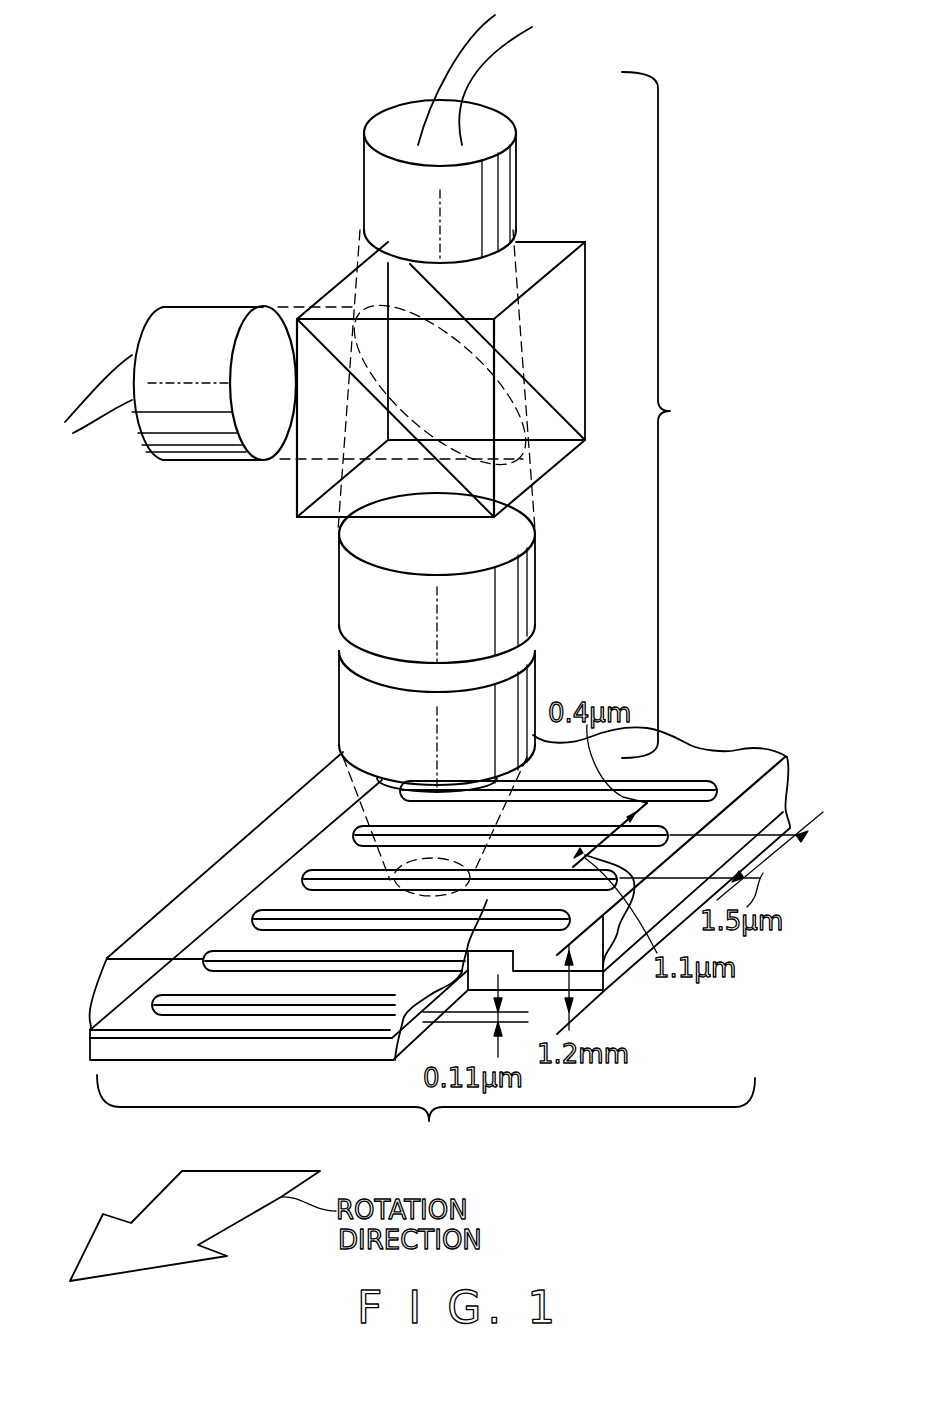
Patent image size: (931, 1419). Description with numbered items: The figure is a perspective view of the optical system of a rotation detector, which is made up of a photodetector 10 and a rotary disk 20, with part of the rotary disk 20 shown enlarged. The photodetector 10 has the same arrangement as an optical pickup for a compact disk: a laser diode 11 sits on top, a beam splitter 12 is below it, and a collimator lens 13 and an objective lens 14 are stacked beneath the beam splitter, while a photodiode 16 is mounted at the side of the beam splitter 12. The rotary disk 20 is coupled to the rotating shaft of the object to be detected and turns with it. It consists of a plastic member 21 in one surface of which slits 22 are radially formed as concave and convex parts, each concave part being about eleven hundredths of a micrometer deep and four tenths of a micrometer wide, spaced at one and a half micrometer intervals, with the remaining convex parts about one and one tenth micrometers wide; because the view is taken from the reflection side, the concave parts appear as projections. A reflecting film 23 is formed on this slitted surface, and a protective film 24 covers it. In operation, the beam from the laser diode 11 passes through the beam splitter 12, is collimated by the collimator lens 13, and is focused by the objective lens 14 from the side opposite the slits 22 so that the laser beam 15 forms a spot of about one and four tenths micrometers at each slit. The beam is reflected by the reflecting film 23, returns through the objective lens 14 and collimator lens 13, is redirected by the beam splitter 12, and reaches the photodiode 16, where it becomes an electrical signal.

The photodetector 10 is at (673, 415).
The laser diode 11 is at (377, 173).
The beam splitter 12 is at (348, 290).
The collimator lens 13 is at (340, 593).
The objective lens 14 is at (340, 711).
The laser beam 15 is at (333, 842).
The photodiode 16 is at (213, 320).
The rotary disk 20 is at (426, 1117).
The plastic member 21 is at (123, 972).
The slits 22 is at (252, 920).
The reflecting film 23 is at (402, 1050).
The protective film 24 is at (84, 1055).